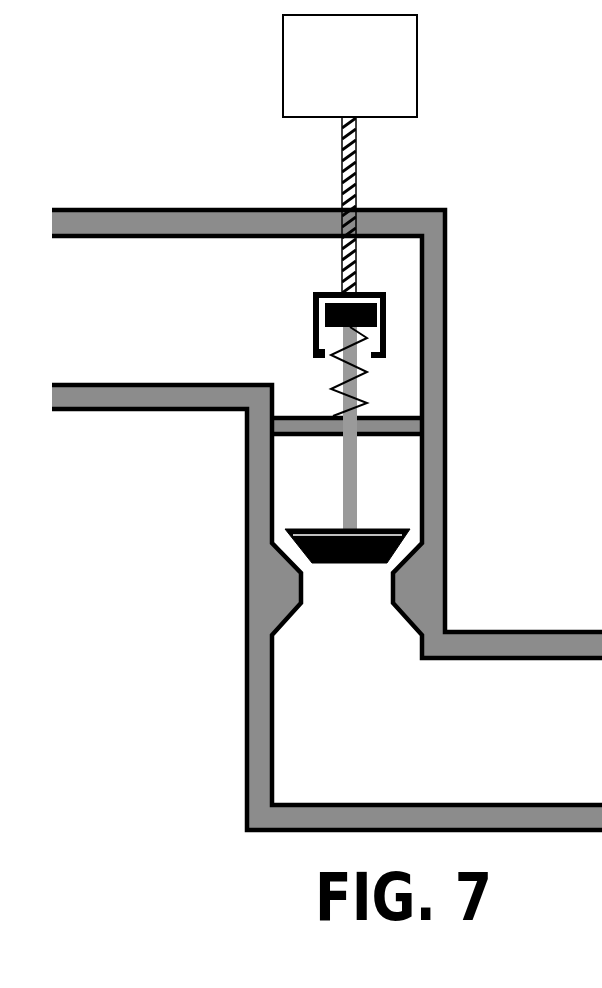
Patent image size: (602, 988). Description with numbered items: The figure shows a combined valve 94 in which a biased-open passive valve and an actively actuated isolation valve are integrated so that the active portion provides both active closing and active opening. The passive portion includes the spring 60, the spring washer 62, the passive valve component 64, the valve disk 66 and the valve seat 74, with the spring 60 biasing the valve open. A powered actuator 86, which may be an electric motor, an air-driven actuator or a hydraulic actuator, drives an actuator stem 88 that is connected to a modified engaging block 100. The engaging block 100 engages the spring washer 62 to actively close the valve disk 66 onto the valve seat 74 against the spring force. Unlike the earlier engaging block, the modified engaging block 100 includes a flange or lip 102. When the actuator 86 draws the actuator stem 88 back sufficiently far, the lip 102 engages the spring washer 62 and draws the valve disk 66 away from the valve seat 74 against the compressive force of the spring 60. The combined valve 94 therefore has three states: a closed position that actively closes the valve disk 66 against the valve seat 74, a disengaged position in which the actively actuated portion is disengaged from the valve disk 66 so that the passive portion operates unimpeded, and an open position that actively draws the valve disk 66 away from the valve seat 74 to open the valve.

The spring 60 is at (365, 372).
The spring washer 62 is at (378, 310).
The passive valve component 64 is at (357, 487).
The valve disk 66 is at (347, 563).
The valve seat 74 is at (293, 563).
The powered actuator 86 is at (364, 87).
The actuator stem 88 is at (340, 160).
The combined valve 94 is at (467, 37).
The modified engaging block 100 is at (315, 322).
The lip 102 is at (320, 357).